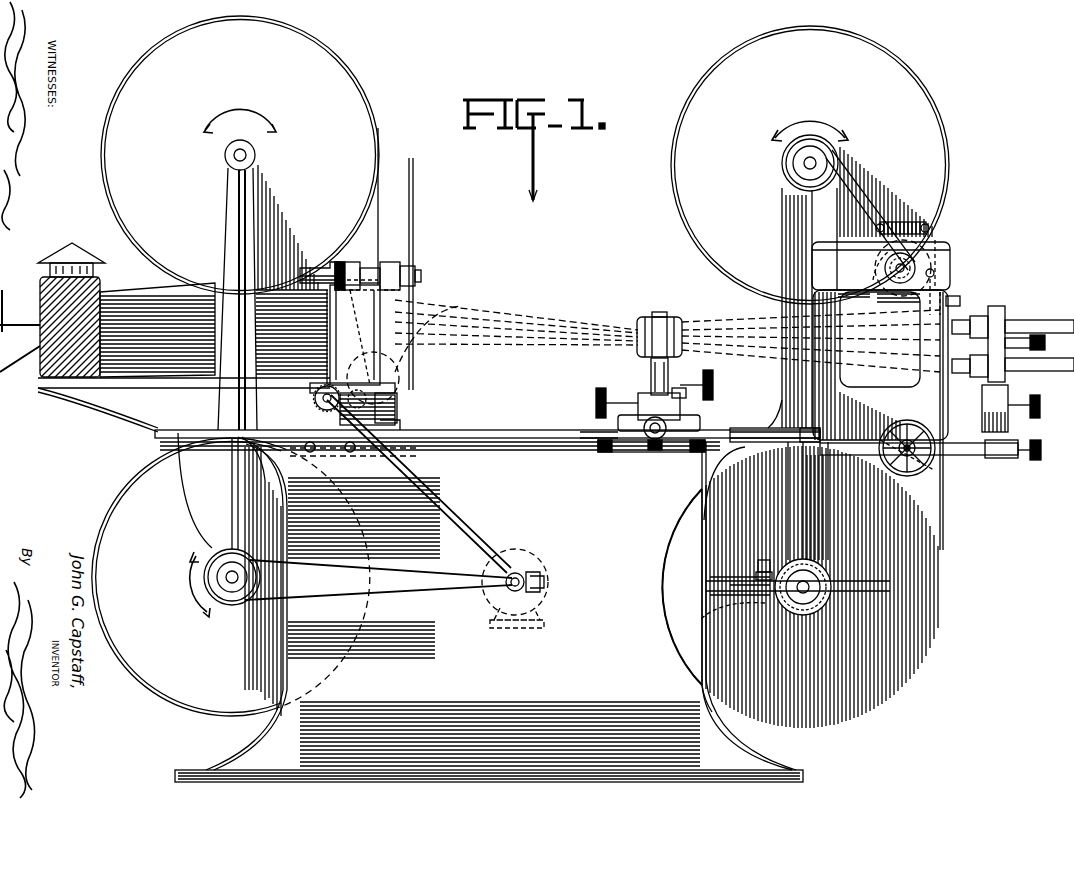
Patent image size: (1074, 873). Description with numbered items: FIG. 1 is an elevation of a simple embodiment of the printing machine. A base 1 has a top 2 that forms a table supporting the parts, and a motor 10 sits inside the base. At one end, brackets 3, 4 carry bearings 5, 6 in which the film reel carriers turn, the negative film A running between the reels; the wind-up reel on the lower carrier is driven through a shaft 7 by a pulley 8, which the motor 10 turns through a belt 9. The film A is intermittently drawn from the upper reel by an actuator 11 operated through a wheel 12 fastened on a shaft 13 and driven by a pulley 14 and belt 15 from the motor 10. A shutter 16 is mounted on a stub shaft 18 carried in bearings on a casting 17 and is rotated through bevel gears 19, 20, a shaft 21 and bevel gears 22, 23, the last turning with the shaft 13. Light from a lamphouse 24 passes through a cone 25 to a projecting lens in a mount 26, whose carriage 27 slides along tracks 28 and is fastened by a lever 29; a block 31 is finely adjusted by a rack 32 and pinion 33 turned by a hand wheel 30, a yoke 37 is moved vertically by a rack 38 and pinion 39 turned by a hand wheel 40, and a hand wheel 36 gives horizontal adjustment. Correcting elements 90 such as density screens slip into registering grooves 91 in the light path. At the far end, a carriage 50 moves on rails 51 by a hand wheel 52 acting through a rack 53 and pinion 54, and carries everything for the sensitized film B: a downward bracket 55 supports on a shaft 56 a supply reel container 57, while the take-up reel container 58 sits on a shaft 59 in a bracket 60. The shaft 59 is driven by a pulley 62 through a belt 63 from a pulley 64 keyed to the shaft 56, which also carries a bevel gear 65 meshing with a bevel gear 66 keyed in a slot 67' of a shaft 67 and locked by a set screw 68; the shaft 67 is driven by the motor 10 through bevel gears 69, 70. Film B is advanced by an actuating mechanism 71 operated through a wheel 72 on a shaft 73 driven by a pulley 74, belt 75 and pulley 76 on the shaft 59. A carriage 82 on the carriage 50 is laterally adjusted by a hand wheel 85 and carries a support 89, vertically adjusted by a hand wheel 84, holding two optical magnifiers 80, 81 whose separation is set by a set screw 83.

The base 1 is at (493, 536).
The top 2 is at (487, 433).
The bracket 3 is at (222, 484).
The bracket 4 is at (237, 204).
The bearing 5 is at (218, 575).
The bearing 6 is at (226, 152).
The shaft 7 is at (218, 584).
The pulley 8 is at (230, 600).
The belt 9 is at (407, 586).
The motor 10 is at (490, 612).
The actuator 11 is at (358, 330).
The wheel 12 is at (396, 416).
The shaft 13 is at (315, 404).
The pulley 14 is at (300, 440).
The belt 15 is at (432, 480).
The shutter 16 is at (414, 208).
The casting 17 is at (400, 288).
The stub shaft 18 is at (382, 262).
The bevel gear 19 is at (348, 262).
The bevel gear 20 is at (340, 262).
The shaft 21 is at (359, 337).
The bevel gear 22 is at (398, 398).
The bevel gear 23 is at (390, 402).
The lamphouse 24 is at (55, 298).
The cone 25 is at (170, 296).
The mount 26 is at (670, 312).
The carriage 27 is at (700, 426).
The tracks 28 is at (585, 440).
The lever 29 is at (645, 445).
The hand wheel 30 is at (656, 452).
The block 31 is at (638, 395).
The rack 32 is at (612, 448).
The pinion 33 is at (676, 452).
The hand wheel 36 is at (596, 401).
The yoke 37 is at (645, 350).
The rack 38 is at (676, 350).
The pinion 39 is at (677, 388).
The hand wheel 40 is at (713, 388).
The carriage 50 is at (745, 436).
The rails 51 is at (732, 430).
The hand wheel 52 is at (935, 464).
The rack 53 is at (936, 450).
The pinion 54 is at (912, 470).
The bracket 55 is at (776, 450).
The shaft 56 is at (830, 592).
The supply reel container 57 is at (922, 567).
The take-up reel container 58 is at (912, 86).
The shaft 59 is at (800, 160).
The bracket 60 is at (805, 218).
The pulley 62 is at (785, 170).
The belt 63 is at (782, 199).
The pulley 64 is at (832, 598).
The bevel gear 65 is at (714, 702).
The bevel gear 66 is at (778, 598).
The shaft 67 is at (705, 576).
The slot 67' is at (853, 581).
The set screw 68 is at (756, 566).
The bevel gear 69 is at (528, 564).
The bevel gear 70 is at (532, 580).
The actuating mechanism 71 is at (958, 310).
The wheel 72 is at (940, 262).
The shaft 73 is at (902, 240).
The pulley 74 is at (886, 276).
The belt 75 is at (886, 266).
The pulley 76 is at (836, 152).
The optical magnifier 80 is at (1038, 320).
The optical magnifier 81 is at (1030, 366).
The carriage 82 is at (984, 406).
The set screw 83 is at (1045, 342).
The hand wheel 84 is at (1040, 410).
The hand wheel 85 is at (1036, 455).
The support 89 is at (998, 308).
The element 90 is at (462, 320).
The registering grooves 91 is at (398, 372).
The negative film A is at (380, 219).
The sensitized film B is at (950, 226).